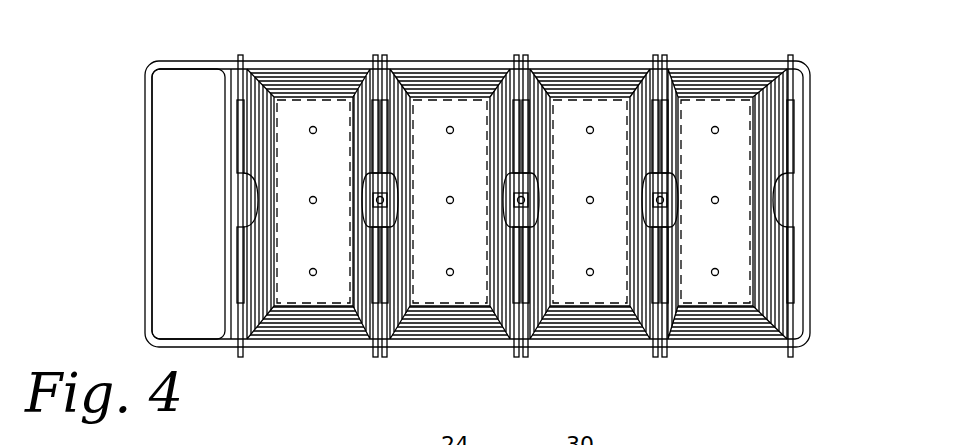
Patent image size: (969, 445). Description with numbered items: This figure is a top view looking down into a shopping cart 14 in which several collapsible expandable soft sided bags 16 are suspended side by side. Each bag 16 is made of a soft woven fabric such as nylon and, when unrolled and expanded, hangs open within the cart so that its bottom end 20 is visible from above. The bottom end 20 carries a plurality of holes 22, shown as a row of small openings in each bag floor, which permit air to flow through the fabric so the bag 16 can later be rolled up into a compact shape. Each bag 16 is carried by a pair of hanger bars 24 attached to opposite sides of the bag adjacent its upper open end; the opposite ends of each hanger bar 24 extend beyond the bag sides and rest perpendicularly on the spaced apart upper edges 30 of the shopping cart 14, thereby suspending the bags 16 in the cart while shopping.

The shopping cart 14 is at (145, 175).
The collapsible expandable soft sided bag 16 is at (437, 92).
The bottom end 20 is at (332, 120).
The holes 22 is at (310, 127).
The hanger bars 24 is at (383, 357).
The upper edges 30 is at (596, 63).